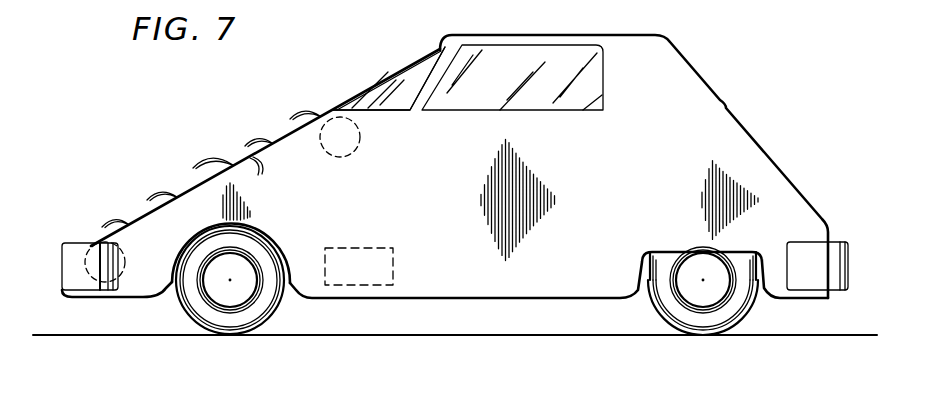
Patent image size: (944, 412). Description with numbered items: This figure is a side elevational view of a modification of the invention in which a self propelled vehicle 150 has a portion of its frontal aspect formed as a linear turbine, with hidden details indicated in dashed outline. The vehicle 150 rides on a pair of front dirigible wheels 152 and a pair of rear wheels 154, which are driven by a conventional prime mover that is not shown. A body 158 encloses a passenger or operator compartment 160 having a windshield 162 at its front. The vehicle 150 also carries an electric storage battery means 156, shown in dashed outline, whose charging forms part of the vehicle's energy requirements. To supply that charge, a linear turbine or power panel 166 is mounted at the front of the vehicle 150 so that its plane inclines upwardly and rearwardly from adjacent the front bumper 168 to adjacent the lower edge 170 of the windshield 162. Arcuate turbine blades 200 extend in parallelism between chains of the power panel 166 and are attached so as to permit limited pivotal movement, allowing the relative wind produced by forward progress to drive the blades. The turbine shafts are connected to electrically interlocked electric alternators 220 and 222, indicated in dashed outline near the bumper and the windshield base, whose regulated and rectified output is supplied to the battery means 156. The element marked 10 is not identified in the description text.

The sound waves 10 is at (233, 135).
The self propelled vehicle 150 is at (738, 99).
The front dirigible wheels 152 is at (233, 318).
The rear wheels 154 is at (705, 318).
The electric storage battery means 156 is at (382, 268).
The body 158 is at (788, 202).
The passenger or operator compartment 160 is at (565, 58).
The windshield 162 is at (400, 84).
The linear turbine or power panel 166 is at (172, 177).
The front bumper 168 is at (72, 265).
The lower edge 170 is at (335, 110).
The arcuate turbine blades 200 is at (251, 188).
The electric alternator 220 is at (123, 260).
The electric alternator 222 is at (346, 155).